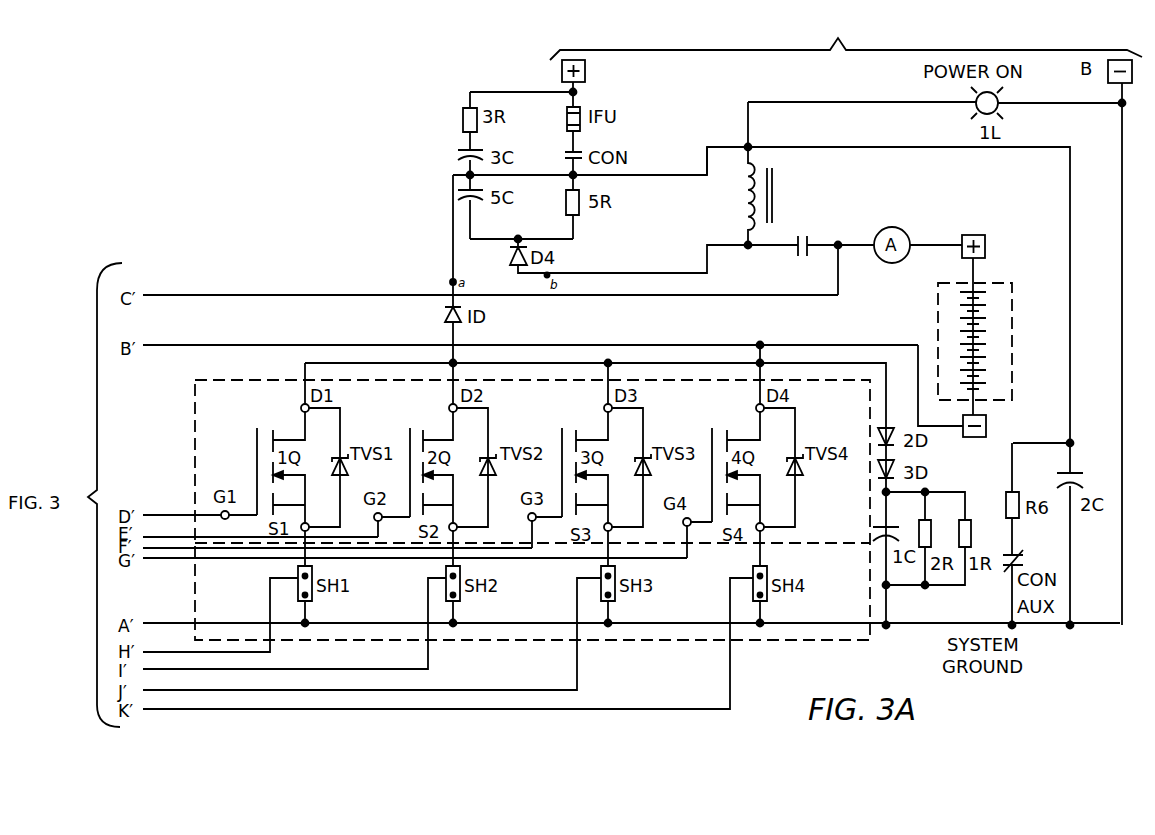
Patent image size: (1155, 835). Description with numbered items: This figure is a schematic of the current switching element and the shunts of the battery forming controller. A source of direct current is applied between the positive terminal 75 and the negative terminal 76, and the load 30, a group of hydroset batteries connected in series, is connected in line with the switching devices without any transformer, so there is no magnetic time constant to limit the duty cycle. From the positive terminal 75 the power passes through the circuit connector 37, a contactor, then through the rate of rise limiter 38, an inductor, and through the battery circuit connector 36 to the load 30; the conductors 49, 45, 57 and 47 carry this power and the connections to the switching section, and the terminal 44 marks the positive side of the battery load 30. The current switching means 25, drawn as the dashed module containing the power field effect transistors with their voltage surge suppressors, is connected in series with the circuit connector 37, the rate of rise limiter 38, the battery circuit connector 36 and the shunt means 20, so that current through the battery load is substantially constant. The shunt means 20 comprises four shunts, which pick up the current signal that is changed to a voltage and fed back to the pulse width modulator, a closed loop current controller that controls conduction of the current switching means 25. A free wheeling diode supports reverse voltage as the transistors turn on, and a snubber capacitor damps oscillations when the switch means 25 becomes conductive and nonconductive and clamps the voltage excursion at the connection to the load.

The B+ voltage 75 is at (597, 85).
The conductor 49 is at (713, 140).
The circuit connector 37 is at (590, 140).
The rate of rise limiter 38 is at (746, 193).
The junction conductor 45 is at (776, 248).
The battery circuit connector 36 is at (802, 258).
The battery load positive terminal 44 is at (937, 243).
The load 30 is at (1005, 285).
The source of direct current terminal 76 is at (1134, 78).
The conductor C' 57 is at (295, 295).
The conductor B' 47 is at (276, 343).
The current switching means 25 is at (192, 445).
The shunt means 20 is at (195, 606).